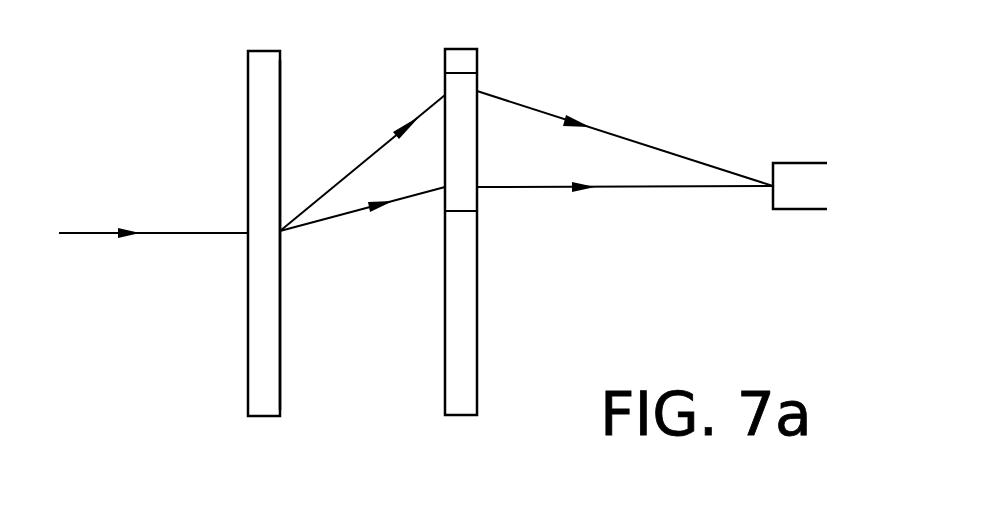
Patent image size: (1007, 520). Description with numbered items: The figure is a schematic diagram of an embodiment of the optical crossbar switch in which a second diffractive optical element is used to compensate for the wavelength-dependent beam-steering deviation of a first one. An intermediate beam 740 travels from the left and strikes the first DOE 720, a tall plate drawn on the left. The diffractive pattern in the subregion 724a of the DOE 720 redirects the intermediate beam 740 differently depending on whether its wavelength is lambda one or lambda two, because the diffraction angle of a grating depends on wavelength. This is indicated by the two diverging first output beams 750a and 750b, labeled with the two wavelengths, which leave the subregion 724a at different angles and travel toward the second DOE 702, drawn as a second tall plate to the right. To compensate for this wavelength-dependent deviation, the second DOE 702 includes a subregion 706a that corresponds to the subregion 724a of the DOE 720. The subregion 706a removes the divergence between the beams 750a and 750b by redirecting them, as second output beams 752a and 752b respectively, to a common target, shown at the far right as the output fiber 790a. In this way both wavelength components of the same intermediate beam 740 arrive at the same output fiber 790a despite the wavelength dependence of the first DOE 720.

The intermediate beam 740 is at (94, 237).
The DOE 720 is at (267, 418).
The subregion 724a is at (262, 228).
The first output beam 750a is at (430, 107).
The first output beam 750b is at (337, 217).
The second DOE 702 is at (463, 418).
The subregion 706a is at (462, 138).
The second output beam 752a is at (620, 137).
The second output beam 752b is at (627, 188).
The output fiber 790a is at (797, 210).